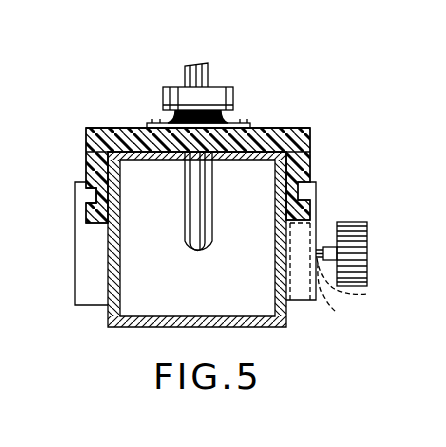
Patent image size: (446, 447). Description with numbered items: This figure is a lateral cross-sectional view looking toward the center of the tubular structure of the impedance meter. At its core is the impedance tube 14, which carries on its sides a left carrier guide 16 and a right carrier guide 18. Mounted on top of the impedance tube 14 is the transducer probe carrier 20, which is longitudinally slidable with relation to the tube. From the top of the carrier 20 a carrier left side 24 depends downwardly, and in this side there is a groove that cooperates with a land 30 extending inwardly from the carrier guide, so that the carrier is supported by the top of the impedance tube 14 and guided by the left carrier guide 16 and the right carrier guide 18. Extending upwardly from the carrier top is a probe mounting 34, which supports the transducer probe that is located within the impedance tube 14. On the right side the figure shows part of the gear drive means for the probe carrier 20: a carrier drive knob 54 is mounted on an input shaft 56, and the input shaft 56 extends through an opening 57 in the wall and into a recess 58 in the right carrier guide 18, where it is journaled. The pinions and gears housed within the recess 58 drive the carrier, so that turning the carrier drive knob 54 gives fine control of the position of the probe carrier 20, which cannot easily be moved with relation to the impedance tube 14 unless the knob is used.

The impedance tube 14 is at (142, 328).
The left carrier guide 16 is at (76, 281).
The right carrier guide 18 is at (318, 205).
The transducer probe carrier 20 is at (319, 130).
The carrier left side 24 is at (85, 144).
The land 30 is at (93, 196).
The probe mounting 34 is at (231, 123).
The carrier drive knob 54 is at (365, 262).
The input shaft 56 is at (320, 247).
The opening 57 is at (359, 284).
The recess 58 is at (342, 295).